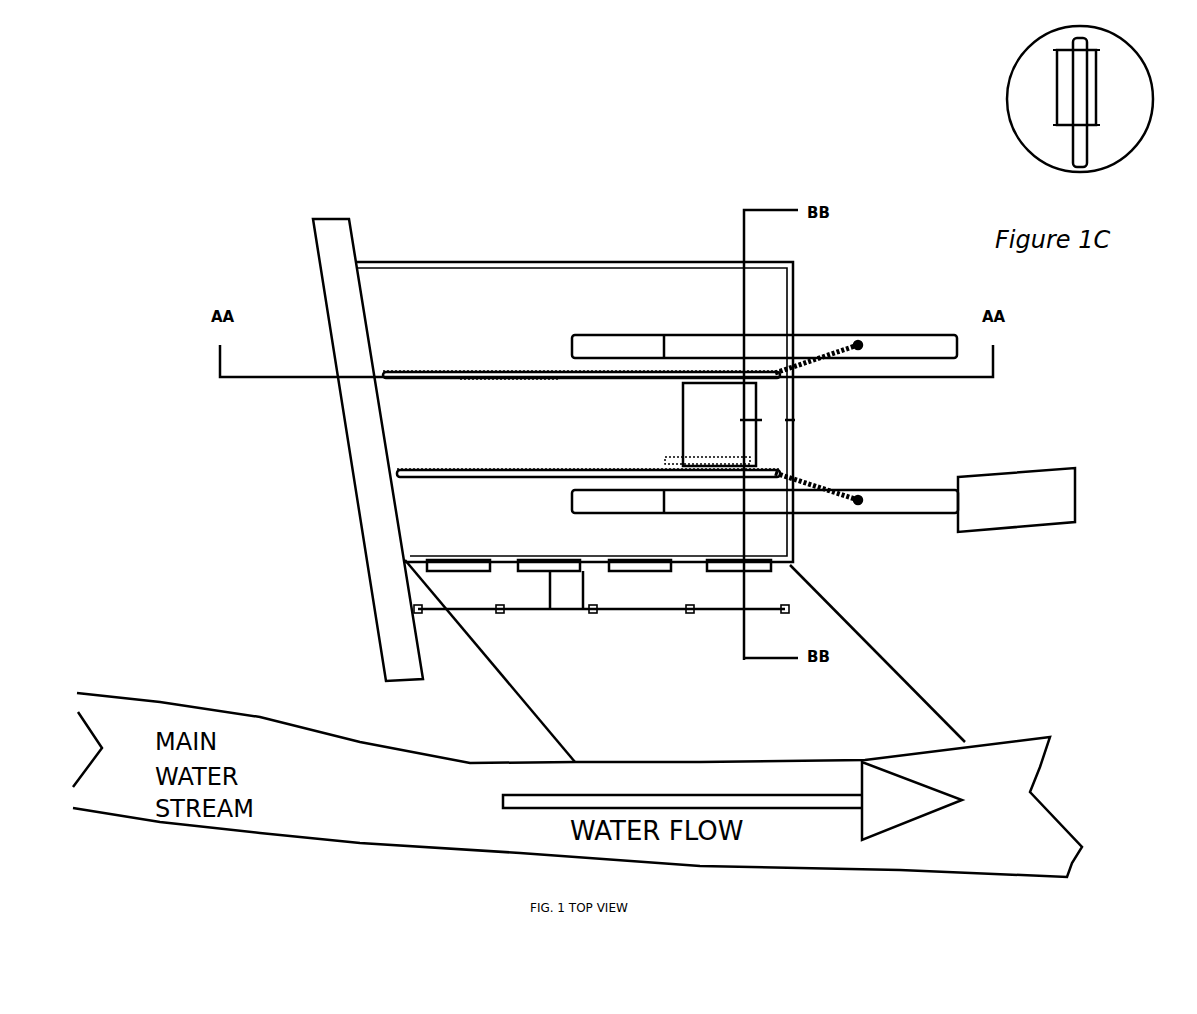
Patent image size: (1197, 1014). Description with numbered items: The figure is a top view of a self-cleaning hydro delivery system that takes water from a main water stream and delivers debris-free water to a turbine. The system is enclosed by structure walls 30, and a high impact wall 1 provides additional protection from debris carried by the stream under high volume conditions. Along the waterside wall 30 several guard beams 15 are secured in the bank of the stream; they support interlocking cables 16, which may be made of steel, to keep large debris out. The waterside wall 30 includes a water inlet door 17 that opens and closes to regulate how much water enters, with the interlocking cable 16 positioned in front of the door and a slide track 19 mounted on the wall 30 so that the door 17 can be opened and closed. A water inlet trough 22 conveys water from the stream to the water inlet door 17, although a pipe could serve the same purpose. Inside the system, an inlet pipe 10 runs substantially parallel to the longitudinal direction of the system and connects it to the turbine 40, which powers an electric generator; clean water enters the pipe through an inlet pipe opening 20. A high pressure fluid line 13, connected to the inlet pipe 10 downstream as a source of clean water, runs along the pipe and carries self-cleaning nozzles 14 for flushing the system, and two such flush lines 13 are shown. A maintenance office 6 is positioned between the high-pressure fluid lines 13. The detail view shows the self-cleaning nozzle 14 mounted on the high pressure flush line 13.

In FIG. 1, the high impact wall 1 is at (342, 432).
In FIG. 1, the maintenance office 6 is at (697, 395).
In FIG. 1, the inlet pipe 10 is at (935, 345).
In FIG. 1, the high pressure fluid line 13 is at (497, 372).
In FIG. 1C, the high pressure fluid line 13 is at (1087, 145).
In FIG. 1, the self-cleaning nozzle 14 is at (436, 372).
In FIG. 1C, the self-cleaning nozzle 14 is at (1092, 50).
In FIG. 1, the guard beam 15 is at (500, 613).
In FIG. 1, the interlocking cable 16 is at (630, 613).
In FIG. 1, the water inlet door 17 is at (550, 609).
In FIG. 1, the slide track 19 is at (583, 609).
In FIG. 1, the inlet pipe opening 20 is at (612, 345).
In FIG. 1, the water inlet trough 22 is at (840, 614).
In FIG. 1, the structure wall 30 is at (530, 262).
In FIG. 1, the turbine 40 is at (1080, 503).